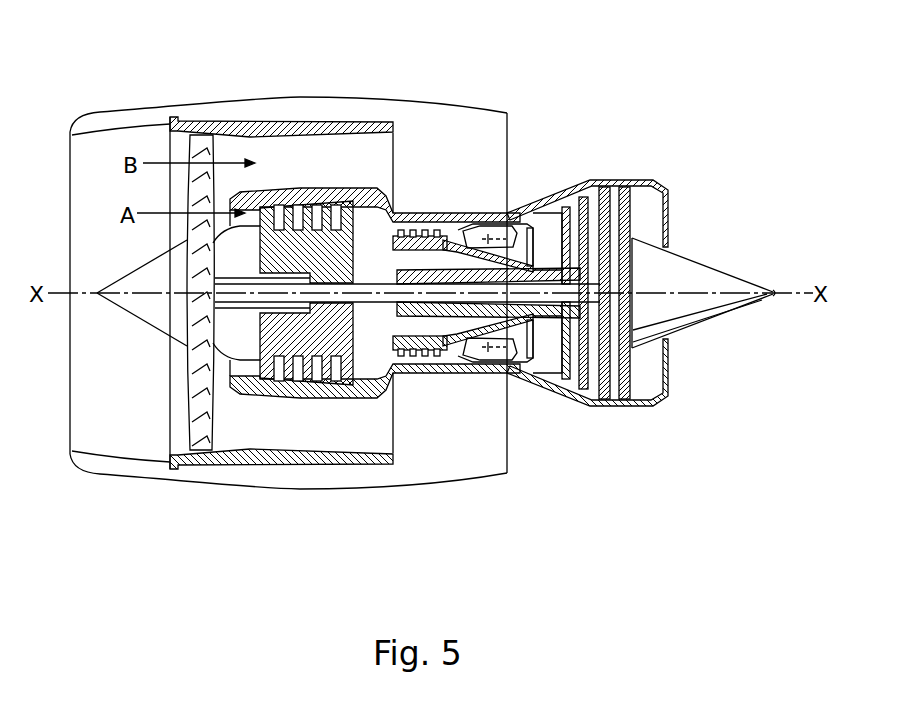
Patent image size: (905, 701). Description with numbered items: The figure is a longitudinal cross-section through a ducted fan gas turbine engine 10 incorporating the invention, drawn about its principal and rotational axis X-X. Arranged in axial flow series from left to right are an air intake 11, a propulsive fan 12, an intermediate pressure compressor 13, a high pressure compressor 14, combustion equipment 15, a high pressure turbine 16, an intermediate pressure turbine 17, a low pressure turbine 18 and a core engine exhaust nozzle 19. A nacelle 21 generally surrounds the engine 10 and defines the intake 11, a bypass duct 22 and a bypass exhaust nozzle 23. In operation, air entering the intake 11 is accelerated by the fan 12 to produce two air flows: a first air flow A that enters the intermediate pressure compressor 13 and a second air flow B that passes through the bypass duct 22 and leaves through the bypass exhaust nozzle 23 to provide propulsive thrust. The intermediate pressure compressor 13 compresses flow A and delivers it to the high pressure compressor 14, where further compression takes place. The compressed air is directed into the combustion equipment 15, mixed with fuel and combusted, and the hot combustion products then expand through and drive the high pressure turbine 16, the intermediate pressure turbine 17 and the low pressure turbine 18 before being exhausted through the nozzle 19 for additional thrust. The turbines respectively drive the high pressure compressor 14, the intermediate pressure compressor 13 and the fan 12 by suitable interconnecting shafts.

The ducted fan gas turbine engine 10 is at (133, 74).
The air intake 11 is at (120, 131).
The propulsive fan 12 is at (187, 403).
The intermediate pressure compressor 13 is at (320, 390).
The high pressure compressor 14 is at (420, 230).
The combustion equipment 15 is at (455, 362).
The high pressure turbine 16 is at (520, 380).
The intermediate pressure turbine 17 is at (553, 203).
The low pressure turbine 18 is at (578, 397).
The core engine exhaust nozzle 19 is at (662, 180).
The nacelle 21 is at (294, 96).
The bypass duct 22 is at (478, 168).
The bypass exhaust nozzle 23 is at (502, 123).